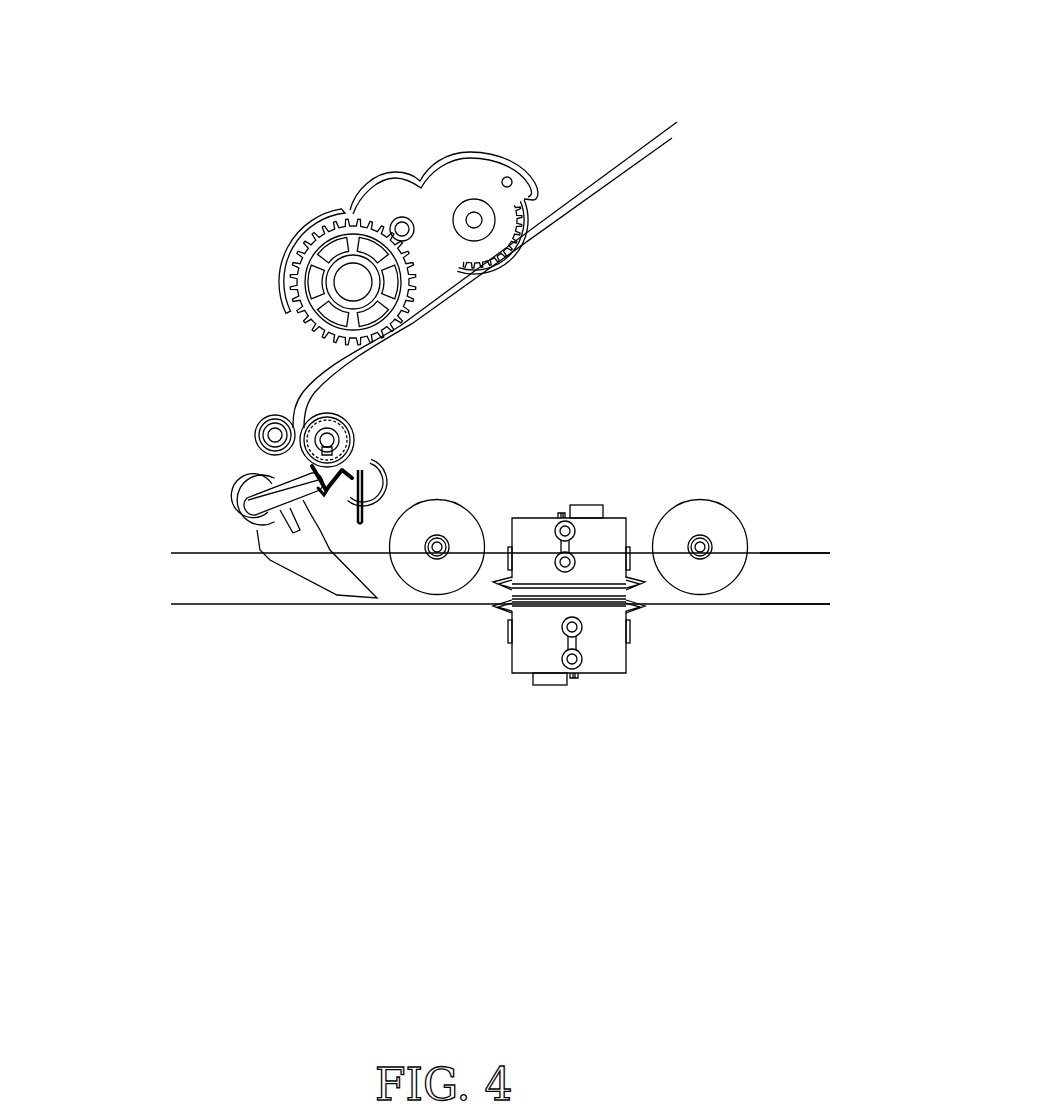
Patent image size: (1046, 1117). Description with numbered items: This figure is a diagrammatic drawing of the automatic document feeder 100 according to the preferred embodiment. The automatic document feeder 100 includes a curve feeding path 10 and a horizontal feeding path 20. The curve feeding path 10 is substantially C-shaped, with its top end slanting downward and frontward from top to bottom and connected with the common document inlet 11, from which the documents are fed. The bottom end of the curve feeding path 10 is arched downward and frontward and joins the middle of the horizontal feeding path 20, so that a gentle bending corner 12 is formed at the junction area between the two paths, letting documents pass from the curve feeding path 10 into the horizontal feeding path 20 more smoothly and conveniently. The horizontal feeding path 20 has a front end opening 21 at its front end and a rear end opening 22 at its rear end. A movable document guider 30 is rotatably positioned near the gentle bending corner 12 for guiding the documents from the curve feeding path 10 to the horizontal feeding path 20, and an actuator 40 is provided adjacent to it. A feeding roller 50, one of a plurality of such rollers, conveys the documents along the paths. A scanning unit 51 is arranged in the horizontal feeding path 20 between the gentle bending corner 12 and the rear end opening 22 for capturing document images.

The automatic document feeder 100 is at (72, 36).
The curve feeding path 10 is at (560, 210).
The common document inlet 11 is at (672, 133).
The gentle bending corner 12 is at (263, 468).
The horizontal feeding path 20 is at (237, 590).
The front end opening 21 is at (175, 575).
The rear end opening 22 is at (825, 587).
The movable document guider 30 is at (240, 497).
The actuator 40 is at (355, 437).
The feeding roller 50 is at (447, 513).
The scanning unit 51 is at (607, 537).